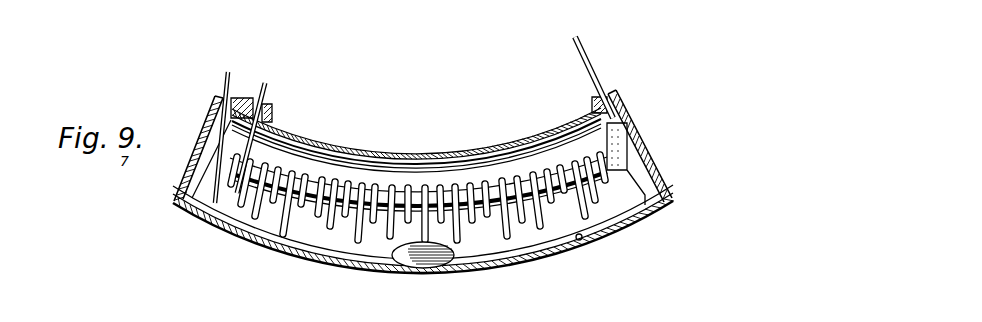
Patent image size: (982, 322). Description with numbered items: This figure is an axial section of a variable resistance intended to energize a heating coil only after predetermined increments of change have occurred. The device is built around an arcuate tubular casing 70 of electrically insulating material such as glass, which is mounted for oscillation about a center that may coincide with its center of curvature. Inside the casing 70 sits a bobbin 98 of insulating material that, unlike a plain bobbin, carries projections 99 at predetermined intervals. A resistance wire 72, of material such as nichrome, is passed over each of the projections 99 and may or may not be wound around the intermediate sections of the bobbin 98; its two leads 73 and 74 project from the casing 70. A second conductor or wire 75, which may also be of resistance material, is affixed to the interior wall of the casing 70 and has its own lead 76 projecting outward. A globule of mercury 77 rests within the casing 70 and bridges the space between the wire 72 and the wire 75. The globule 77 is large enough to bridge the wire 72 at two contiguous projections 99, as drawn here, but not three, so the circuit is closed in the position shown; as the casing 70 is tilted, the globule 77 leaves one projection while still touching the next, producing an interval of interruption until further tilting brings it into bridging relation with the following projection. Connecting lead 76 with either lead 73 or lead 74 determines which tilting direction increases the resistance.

The tubular casing 70 is at (487, 152).
The resistance wire 72 is at (352, 178).
The lead 73 is at (267, 87).
The lead 74 is at (590, 64).
The second conductor 75 is at (580, 241).
The lead 76 is at (225, 78).
The globule of mercury 77 is at (423, 258).
The bobbin 98 is at (417, 183).
The projections 99 is at (540, 222).